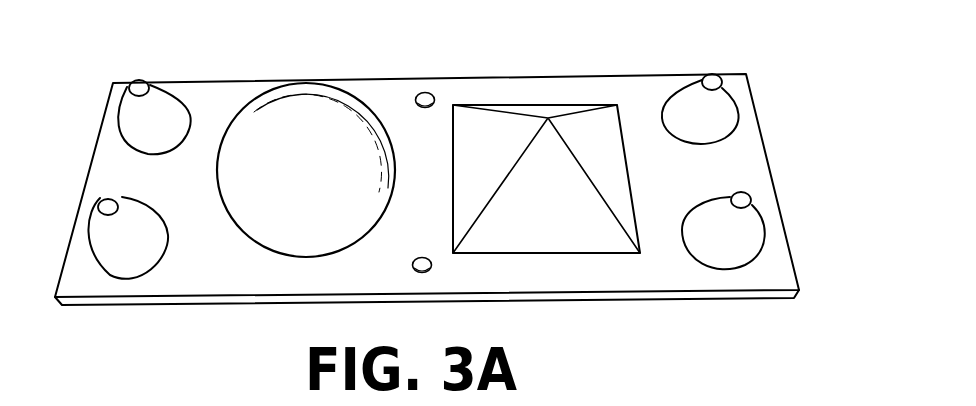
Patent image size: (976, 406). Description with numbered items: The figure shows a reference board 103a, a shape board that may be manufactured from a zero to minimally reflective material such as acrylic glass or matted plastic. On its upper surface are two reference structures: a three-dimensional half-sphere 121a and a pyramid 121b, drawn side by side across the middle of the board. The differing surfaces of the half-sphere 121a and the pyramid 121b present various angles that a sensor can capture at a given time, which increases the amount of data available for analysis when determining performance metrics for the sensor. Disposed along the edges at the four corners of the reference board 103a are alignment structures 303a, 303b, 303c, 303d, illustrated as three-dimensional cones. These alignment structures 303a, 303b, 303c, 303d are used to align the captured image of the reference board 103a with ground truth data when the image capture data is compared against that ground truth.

The reference board 103a is at (738, 358).
The reference structure 121a is at (392, 105).
The reference structure 121b is at (637, 105).
The alignment structure 303a is at (142, 93).
The alignment structure 303b is at (726, 86).
The alignment structure 303c is at (746, 224).
The alignment structure 303d is at (112, 223).